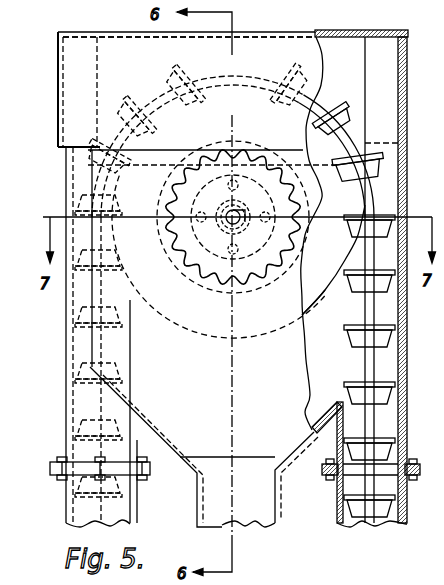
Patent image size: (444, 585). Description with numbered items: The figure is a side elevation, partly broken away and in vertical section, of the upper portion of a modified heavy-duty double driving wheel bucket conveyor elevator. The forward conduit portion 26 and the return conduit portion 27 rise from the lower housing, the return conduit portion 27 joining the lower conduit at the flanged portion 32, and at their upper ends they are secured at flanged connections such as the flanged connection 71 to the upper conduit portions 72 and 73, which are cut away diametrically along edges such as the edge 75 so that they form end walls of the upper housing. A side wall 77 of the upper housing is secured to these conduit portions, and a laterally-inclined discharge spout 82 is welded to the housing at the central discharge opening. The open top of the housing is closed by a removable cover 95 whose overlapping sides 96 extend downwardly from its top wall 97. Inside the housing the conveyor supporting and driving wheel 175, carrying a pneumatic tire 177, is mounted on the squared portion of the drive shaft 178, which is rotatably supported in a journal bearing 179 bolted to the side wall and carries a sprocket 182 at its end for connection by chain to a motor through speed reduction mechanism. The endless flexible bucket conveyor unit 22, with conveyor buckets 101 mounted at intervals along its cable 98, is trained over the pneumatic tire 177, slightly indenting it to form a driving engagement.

The endless flexible bucket conveyor unit 22 is at (262, 584).
The forward conduit portion 26 is at (404, 497).
The return conduit portion 27 is at (137, 500).
The flanged portion 32 is at (393, 450).
The flanged connection 71 is at (150, 468).
The upper conduit portion 72 is at (404, 390).
The upper conduit portion 73 is at (67, 320).
The edge 75 is at (412, 172).
The side wall 77 is at (294, 360).
The discharge spout 82 is at (265, 500).
The removable cover 95 is at (331, 37).
The overlapping sides 96 is at (406, 66).
The top wall 97 is at (337, 31).
The cable 98 is at (404, 122).
The conveyor bucket 101 is at (120, 318).
The conveyor supporting and driving wheel 175 is at (330, 280).
The pneumatic tire 177 is at (332, 297).
The drive shaft 178 is at (248, 220).
The journal bearing 179 is at (219, 239).
The sprocket 182 is at (290, 279).